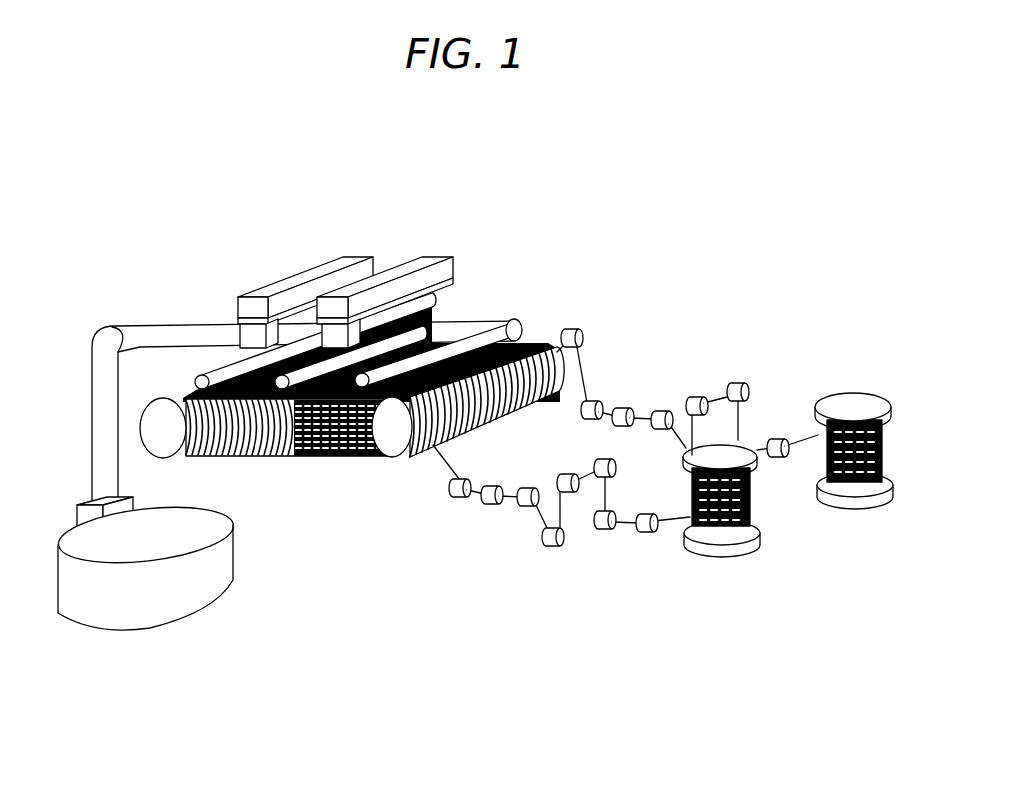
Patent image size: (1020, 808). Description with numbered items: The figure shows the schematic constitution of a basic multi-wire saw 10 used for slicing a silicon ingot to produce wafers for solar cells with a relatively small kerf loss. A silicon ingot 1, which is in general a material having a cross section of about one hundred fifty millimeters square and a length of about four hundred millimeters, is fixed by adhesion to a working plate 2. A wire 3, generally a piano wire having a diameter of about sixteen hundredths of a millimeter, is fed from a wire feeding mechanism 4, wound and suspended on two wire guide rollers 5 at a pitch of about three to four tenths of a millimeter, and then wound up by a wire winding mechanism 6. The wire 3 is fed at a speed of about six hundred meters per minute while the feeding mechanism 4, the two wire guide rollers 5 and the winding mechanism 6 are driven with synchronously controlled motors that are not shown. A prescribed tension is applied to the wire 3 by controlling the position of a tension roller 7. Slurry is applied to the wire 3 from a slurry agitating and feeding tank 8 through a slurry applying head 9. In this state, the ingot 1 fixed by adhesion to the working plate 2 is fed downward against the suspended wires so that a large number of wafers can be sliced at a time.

The multi-wire saw 10 is at (240, 254).
The silicon ingot 1 is at (460, 290).
The working plate 2 is at (393, 265).
The wire 3 is at (441, 462).
The wire feeding mechanism 4 is at (730, 548).
The wire guide rollers 5 is at (165, 458).
The wire winding mechanism 6 is at (865, 499).
The tension roller 7 is at (682, 452).
The slurry agitating and feeding tank 8 is at (162, 628).
The slurry applying head 9 is at (483, 323).